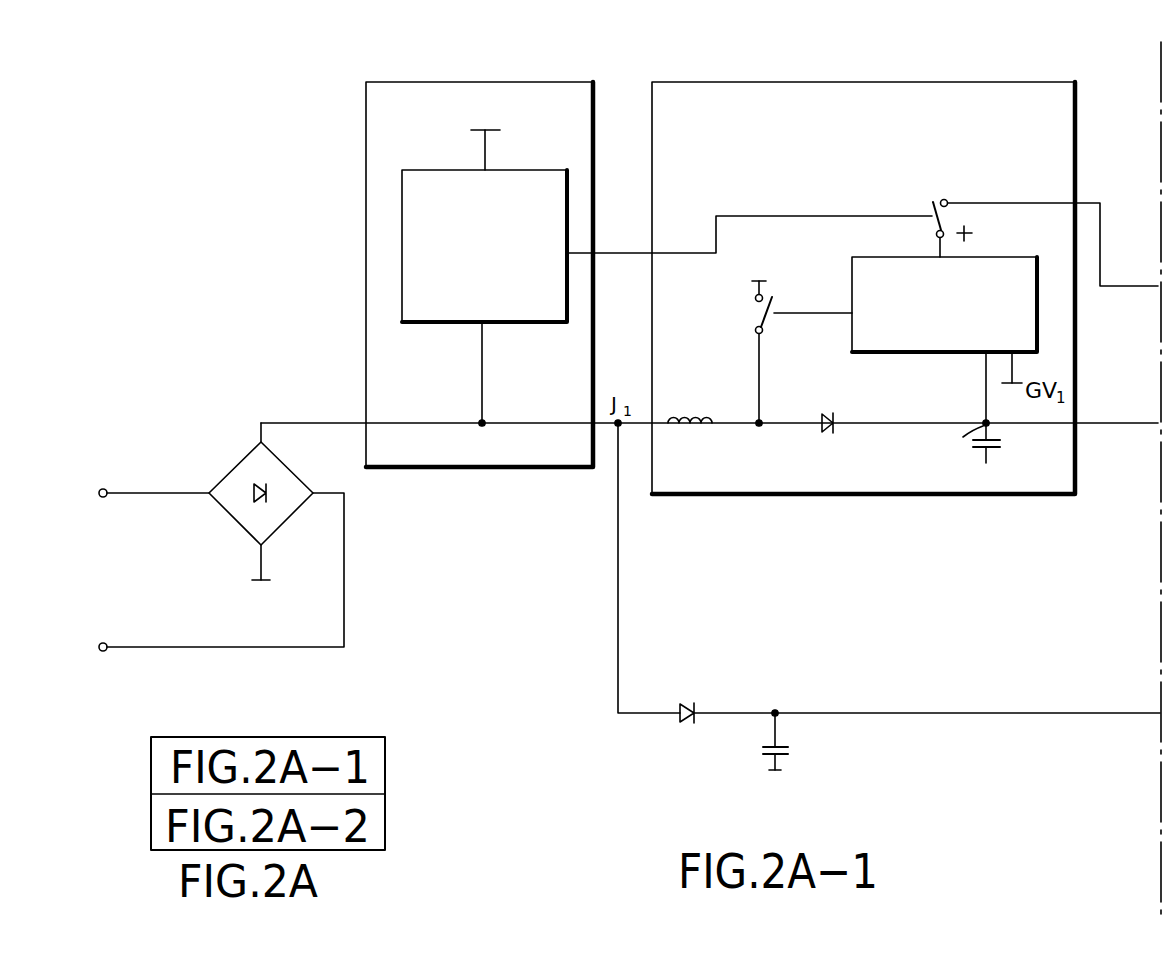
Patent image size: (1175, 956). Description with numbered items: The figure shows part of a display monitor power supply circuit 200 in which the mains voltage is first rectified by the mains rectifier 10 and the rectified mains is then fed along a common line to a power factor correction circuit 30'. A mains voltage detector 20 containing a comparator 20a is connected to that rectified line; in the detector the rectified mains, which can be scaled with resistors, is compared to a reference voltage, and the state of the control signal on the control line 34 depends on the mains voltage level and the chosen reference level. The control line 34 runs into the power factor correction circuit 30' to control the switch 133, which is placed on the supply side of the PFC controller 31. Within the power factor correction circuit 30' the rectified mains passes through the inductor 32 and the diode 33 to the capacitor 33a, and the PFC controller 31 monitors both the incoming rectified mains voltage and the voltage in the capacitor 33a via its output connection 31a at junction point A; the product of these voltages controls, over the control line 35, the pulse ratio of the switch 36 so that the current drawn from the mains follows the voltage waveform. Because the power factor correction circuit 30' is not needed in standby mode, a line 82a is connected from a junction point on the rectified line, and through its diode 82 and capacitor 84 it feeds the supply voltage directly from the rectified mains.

The display monitor power supply circuit 200 is at (231, 145).
The mains voltage detector 20 is at (366, 252).
The comparator 20a is at (429, 181).
The mains rectifier 10 is at (239, 462).
The power factor correction circuit 30' is at (863, 271).
The control line 34 is at (806, 215).
The switch 133 is at (932, 206).
The switch 36 is at (765, 312).
The control line 35 is at (810, 315).
The PFC controller 31 is at (915, 354).
The PFC controller output line 31a is at (986, 354).
The inductor 32 is at (684, 428).
The diode 33 is at (820, 427).
The capacitor 33a is at (1040, 458).
The line 82a is at (617, 624).
The diode 82 is at (680, 714).
The capacitor 84 is at (778, 770).